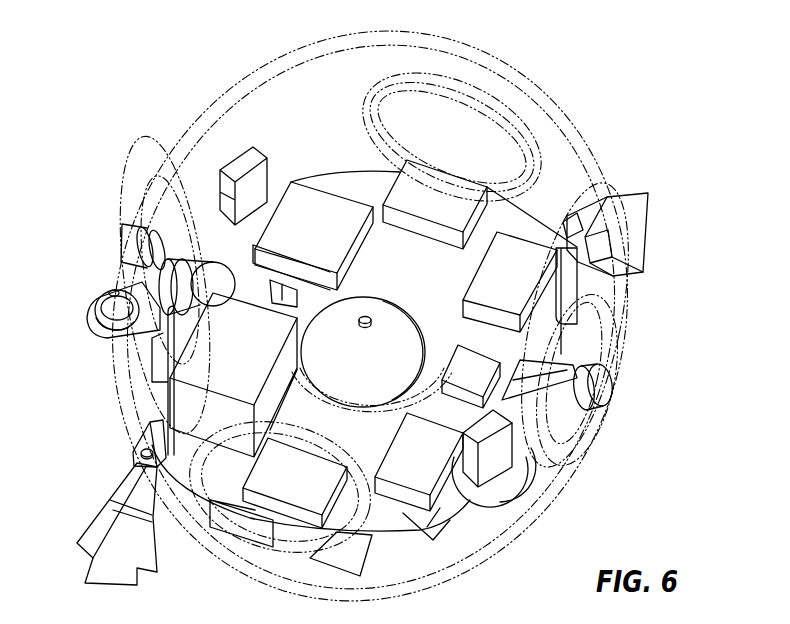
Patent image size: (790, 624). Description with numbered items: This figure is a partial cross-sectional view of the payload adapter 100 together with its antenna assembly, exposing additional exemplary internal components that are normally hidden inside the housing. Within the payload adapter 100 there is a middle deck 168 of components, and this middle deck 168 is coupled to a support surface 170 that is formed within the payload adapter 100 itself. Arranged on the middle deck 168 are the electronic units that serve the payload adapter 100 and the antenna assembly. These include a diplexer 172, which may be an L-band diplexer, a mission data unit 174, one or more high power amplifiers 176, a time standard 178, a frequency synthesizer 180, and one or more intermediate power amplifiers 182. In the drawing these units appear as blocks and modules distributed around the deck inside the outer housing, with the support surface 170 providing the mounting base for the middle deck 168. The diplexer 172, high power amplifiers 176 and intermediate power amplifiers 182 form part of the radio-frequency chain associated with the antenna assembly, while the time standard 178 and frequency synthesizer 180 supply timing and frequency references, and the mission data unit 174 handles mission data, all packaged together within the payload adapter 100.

The payload adapter 100 is at (558, 77).
The middle deck 168 is at (217, 247).
The support surface 170 is at (133, 463).
The diplexer 172 is at (277, 293).
The mission data unit 174 is at (197, 380).
The high power amplifier 176 is at (447, 197).
The time standard 178 is at (510, 360).
The frequency synthesizer 180 is at (303, 200).
The intermediate power amplifier 182 is at (512, 290).